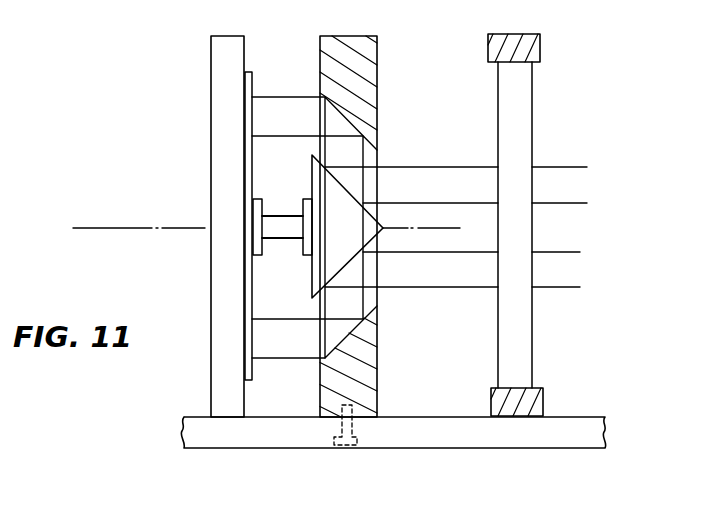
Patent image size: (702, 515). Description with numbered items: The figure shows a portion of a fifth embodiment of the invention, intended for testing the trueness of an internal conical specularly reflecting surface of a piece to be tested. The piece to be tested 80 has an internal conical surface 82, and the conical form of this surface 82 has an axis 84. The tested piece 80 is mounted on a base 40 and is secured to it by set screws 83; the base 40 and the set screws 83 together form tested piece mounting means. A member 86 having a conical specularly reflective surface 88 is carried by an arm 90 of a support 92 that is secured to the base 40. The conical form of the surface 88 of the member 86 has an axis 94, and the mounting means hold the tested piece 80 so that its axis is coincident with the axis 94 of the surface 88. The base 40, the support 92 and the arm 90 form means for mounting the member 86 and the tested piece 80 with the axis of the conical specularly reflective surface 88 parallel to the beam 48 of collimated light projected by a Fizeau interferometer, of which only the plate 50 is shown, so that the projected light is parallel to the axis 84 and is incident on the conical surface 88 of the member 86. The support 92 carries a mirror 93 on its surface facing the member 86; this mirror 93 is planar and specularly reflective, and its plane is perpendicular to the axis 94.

The base 40 is at (432, 426).
The beam of collimated light 48 is at (577, 206).
The plate 50 is at (521, 106).
The piece to be tested 80 is at (377, 52).
The conical surface 82 is at (373, 145).
The set screws 83 is at (357, 425).
The axis 84 is at (437, 231).
The member 86 is at (334, 243).
The conical specularly reflective surface 88 is at (357, 263).
The arm 90 is at (281, 213).
The support 92 is at (222, 84).
The mirror 93 is at (252, 89).
The axis 94 is at (152, 228).